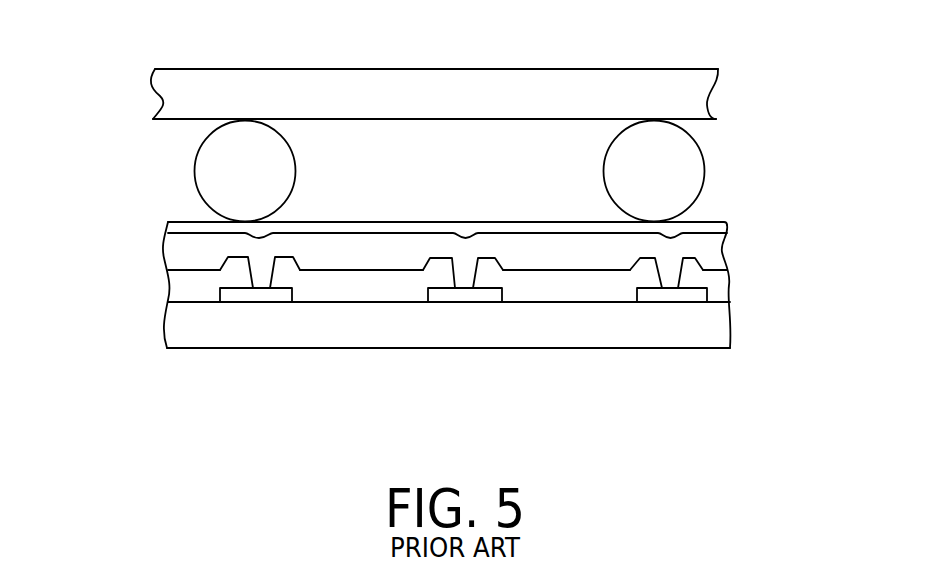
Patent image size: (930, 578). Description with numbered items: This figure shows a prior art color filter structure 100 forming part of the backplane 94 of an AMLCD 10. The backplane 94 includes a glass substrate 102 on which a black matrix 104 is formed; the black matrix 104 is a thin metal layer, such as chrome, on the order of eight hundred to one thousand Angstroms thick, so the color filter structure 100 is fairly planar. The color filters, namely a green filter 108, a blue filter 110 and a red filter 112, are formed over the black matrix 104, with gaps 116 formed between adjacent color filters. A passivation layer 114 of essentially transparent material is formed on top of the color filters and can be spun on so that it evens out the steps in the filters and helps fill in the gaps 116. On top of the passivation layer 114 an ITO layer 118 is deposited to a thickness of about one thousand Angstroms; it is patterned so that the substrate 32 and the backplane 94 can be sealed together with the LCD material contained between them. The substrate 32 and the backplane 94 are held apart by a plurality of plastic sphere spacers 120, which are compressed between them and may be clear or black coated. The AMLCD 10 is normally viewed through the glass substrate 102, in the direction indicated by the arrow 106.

The AMLCD 10 is at (475, 117).
The substrate 32 is at (434, 112).
The plastic sphere spacers 120 is at (227, 184).
The color filter structure 100 is at (423, 309).
The passivation layer 114 is at (400, 257).
The ITO layer 118 is at (473, 232).
The green filter 108 is at (308, 288).
The gaps 116 is at (260, 268).
The red filter 112 is at (197, 291).
The blue filter 110 is at (533, 287).
The black matrix 104 is at (255, 292).
The backplane 94 is at (217, 337).
The glass substrate 102 is at (359, 337).
The arrow 106 is at (568, 378).